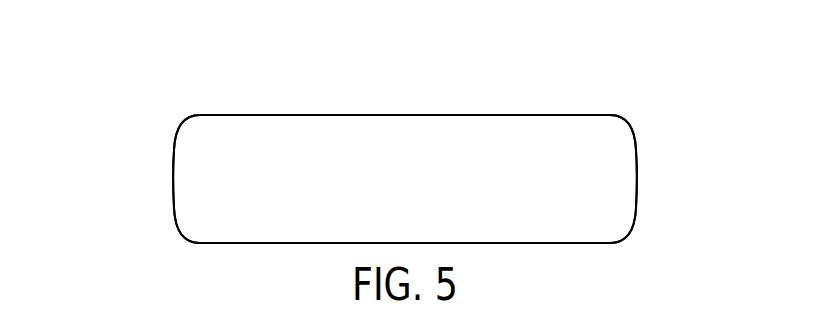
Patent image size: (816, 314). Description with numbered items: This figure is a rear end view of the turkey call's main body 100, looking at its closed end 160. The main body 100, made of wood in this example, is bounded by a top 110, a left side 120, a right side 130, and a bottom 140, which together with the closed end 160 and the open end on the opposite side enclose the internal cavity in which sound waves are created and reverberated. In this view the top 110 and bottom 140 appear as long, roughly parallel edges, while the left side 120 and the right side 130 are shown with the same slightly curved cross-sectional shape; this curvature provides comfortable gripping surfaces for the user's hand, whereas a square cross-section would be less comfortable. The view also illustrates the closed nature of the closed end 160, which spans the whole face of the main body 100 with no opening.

The main body 100 is at (633, 148).
The top 110 is at (212, 114).
The left side 120 is at (637, 187).
The right side 130 is at (173, 185).
The bottom 140 is at (227, 243).
The closed end 160 is at (528, 176).